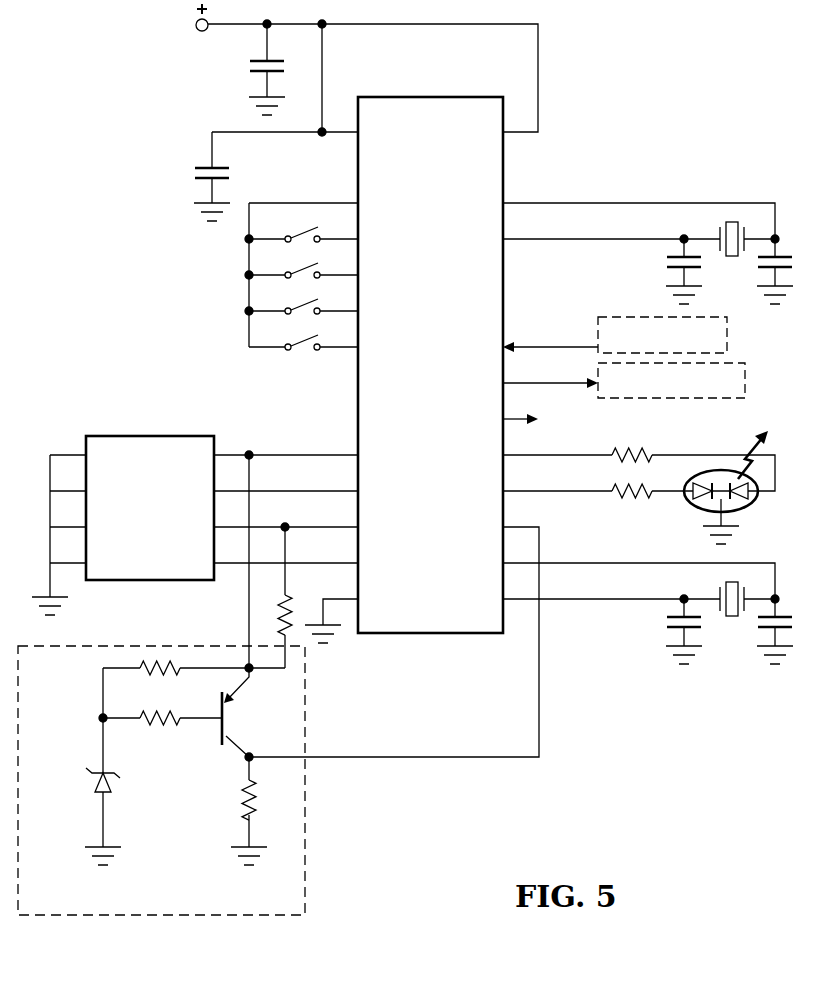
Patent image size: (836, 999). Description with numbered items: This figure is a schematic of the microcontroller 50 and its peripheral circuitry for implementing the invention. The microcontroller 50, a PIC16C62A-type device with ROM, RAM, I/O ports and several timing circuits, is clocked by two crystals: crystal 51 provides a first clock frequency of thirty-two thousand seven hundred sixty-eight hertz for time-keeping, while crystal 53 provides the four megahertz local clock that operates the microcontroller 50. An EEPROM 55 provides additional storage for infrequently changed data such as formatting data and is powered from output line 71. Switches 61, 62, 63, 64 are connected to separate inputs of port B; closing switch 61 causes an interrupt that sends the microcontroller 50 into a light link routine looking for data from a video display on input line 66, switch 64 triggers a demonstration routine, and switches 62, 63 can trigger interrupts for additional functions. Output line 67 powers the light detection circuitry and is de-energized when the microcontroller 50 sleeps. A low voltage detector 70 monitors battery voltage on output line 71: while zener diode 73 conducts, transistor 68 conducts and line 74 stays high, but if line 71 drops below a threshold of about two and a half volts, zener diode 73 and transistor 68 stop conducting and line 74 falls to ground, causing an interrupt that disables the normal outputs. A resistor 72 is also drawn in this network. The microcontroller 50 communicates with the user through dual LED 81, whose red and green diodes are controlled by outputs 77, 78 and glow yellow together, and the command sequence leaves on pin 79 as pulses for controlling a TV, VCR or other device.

The microcontroller 50 is at (458, 97).
The crystal 51 is at (731, 258).
The crystal 53 is at (731, 618).
The EEPROM 55 is at (172, 436).
The switch 61 is at (306, 232).
The switch 62 is at (306, 268).
The switch 63 is at (306, 304).
The switch 64 is at (306, 340).
The input line 66 is at (523, 346).
The output line 67 is at (517, 418).
The transistor 68 is at (233, 713).
The low voltage detector 70 is at (185, 646).
The output line 71 is at (313, 455).
The resistor 72 is at (292, 612).
The zener diode 73 is at (95, 786).
The line 74 is at (449, 757).
The output 77 is at (600, 453).
The output 78 is at (600, 489).
The pin 79 is at (517, 382).
The dual LED 81 is at (750, 509).